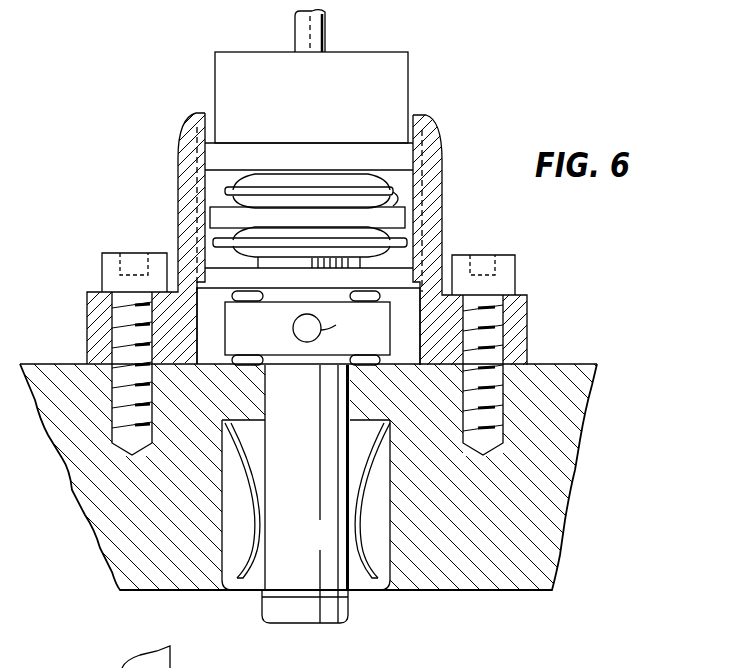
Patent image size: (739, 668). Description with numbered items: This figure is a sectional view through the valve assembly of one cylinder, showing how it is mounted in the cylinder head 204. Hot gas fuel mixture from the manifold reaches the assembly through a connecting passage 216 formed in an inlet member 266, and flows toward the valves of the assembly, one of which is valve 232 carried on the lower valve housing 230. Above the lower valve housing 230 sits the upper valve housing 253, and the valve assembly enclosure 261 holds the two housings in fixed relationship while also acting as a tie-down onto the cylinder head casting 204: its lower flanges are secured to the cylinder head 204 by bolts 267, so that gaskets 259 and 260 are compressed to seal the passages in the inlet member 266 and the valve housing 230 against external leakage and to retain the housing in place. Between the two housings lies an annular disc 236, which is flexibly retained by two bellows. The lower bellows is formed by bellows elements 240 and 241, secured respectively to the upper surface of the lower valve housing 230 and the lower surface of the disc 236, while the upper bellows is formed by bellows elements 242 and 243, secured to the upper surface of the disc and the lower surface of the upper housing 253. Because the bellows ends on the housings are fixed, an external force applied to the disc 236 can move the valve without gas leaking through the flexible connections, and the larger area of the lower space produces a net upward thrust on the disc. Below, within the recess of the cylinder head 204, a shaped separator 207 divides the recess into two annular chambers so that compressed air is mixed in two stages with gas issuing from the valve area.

The cylinder head 204 is at (165, 569).
The shaped separator 207 is at (362, 523).
The connecting passage 216 is at (296, 323).
The lower valve housing 230 is at (320, 544).
The valve 232 is at (349, 612).
The annular disc 236 is at (218, 215).
The bellows element 240 is at (414, 256).
The bellows element 241 is at (414, 228).
The bellows element 242 is at (414, 197).
The bellows element 243 is at (404, 200).
The upper valve housing 253 is at (268, 88).
The gasket 259 is at (363, 364).
The gasket 260 is at (393, 289).
The valve assembly enclosure 261 is at (180, 152).
The inlet member 266 is at (270, 343).
The bolts 267 is at (130, 260).